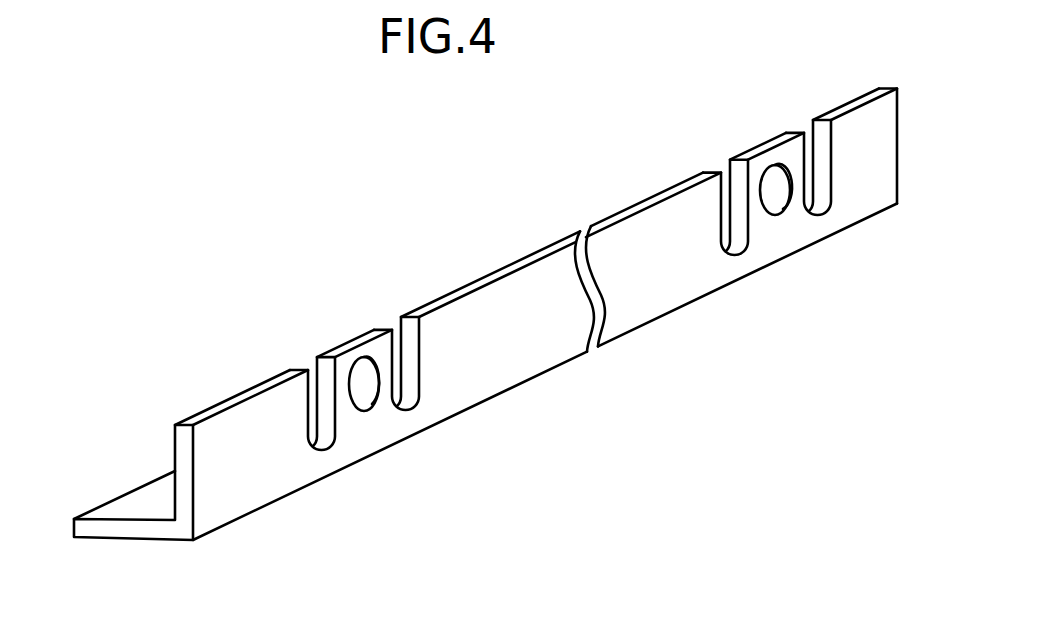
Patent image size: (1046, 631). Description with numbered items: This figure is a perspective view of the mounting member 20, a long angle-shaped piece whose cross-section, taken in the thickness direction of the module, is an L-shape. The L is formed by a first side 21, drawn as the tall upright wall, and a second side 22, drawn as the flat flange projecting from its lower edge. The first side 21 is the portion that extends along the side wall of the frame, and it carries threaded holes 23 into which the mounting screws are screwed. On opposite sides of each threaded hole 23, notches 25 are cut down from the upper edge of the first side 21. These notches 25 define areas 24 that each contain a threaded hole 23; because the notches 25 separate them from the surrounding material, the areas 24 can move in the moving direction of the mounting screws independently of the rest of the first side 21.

The mounting member 20 is at (473, 268).
The first side 21 is at (261, 447).
The second side 22 is at (135, 512).
The threaded holes 23 is at (364, 397).
The areas 24 is at (767, 157).
The notches 25 is at (407, 348).